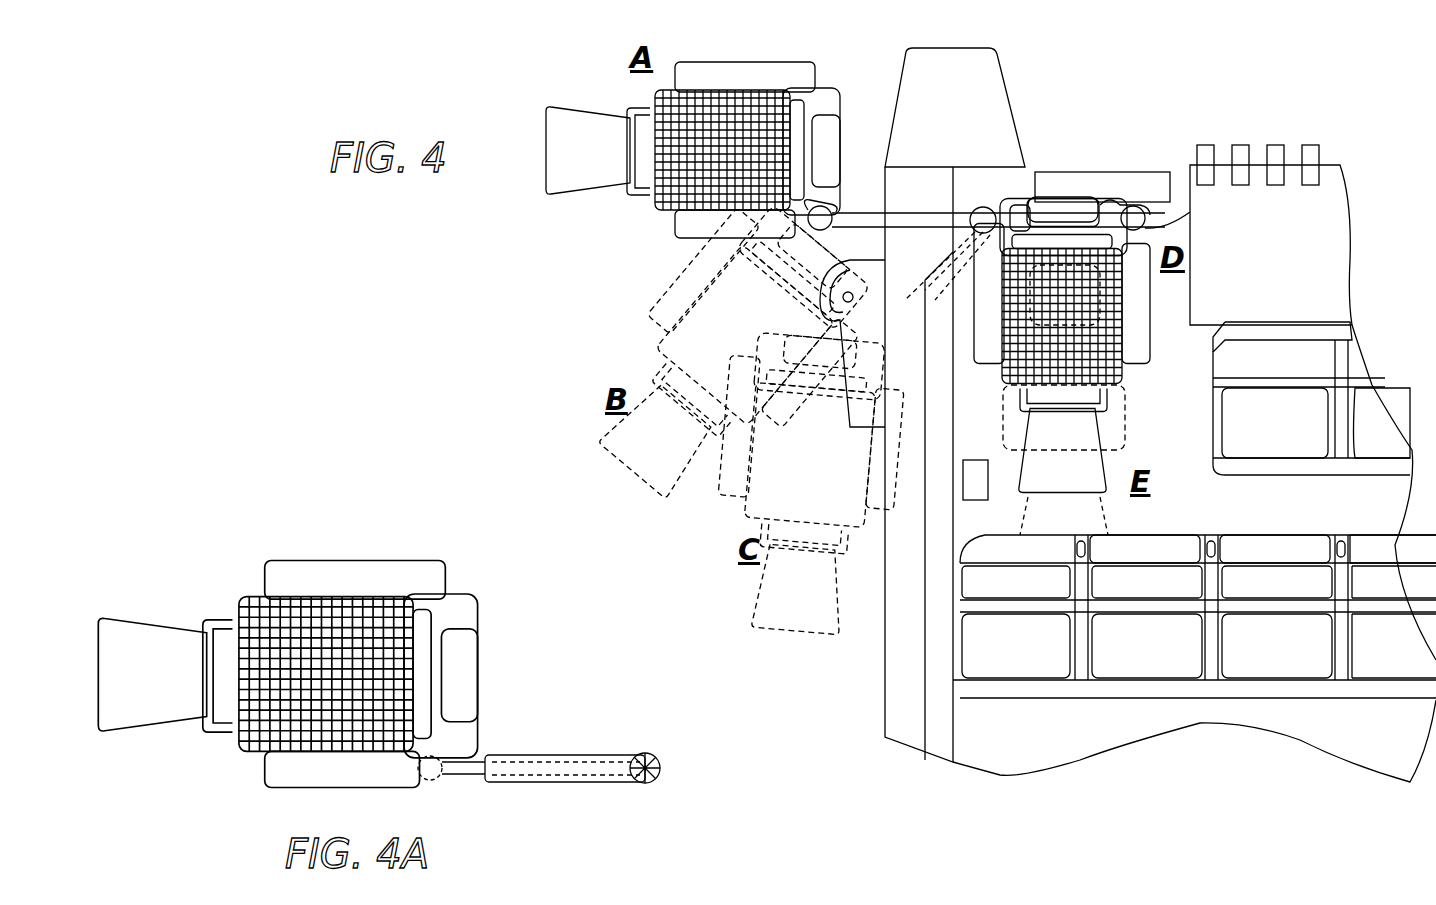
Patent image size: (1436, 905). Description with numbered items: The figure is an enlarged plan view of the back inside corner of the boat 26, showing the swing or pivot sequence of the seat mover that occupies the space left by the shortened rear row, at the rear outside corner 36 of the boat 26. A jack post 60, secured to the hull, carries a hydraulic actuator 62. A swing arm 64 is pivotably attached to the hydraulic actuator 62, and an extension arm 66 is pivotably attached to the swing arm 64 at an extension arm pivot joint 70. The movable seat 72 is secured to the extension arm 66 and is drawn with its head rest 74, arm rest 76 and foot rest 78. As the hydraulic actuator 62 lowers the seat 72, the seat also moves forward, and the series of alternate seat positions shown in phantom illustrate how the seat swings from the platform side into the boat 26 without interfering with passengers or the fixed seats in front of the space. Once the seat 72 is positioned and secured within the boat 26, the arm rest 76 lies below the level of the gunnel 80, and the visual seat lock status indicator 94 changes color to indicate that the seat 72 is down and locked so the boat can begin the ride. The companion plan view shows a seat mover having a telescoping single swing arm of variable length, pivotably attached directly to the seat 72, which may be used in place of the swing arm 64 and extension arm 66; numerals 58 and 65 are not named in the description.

In FIG. 4, the boat 26 is at (900, 768).
In FIG. 4, the rear outside corner 36 is at (1076, 150).
In FIG. 4, the pivot 58 is at (950, 238).
In FIG. 4, the jack post 60 is at (977, 195).
In FIG. 4A, the jack post 60 is at (646, 752).
In FIG. 4, the hydraulic actuator 62 is at (995, 200).
In FIG. 4, the swing arm 64 is at (922, 212).
In FIG. 4A, the arm 65 is at (555, 755).
In FIG. 4, the extension arm 66 is at (842, 200).
In FIG. 4, the extension arm pivot joint 70 is at (1140, 207).
In FIG. 4, the movable seat 72 is at (730, 105).
In FIG. 4A, the movable seat 72 is at (258, 600).
In FIG. 4, the head rest 74 is at (1125, 342).
In FIG. 4, the arm rest 76 is at (1140, 405).
In FIG. 4, the foot rest 78 is at (1090, 520).
In FIG. 4, the gunnel 80 is at (900, 675).
In FIG. 4, the visual seat lock status indicator 94 is at (988, 490).